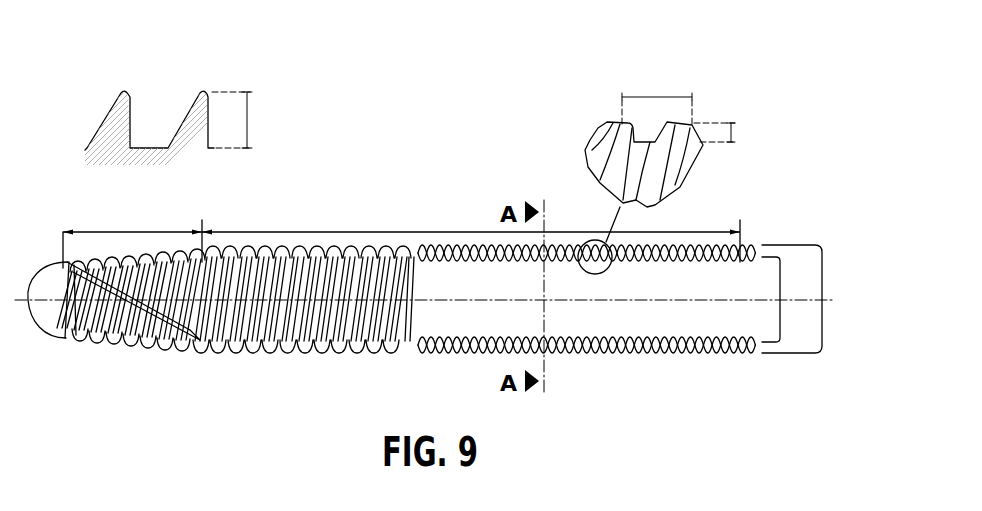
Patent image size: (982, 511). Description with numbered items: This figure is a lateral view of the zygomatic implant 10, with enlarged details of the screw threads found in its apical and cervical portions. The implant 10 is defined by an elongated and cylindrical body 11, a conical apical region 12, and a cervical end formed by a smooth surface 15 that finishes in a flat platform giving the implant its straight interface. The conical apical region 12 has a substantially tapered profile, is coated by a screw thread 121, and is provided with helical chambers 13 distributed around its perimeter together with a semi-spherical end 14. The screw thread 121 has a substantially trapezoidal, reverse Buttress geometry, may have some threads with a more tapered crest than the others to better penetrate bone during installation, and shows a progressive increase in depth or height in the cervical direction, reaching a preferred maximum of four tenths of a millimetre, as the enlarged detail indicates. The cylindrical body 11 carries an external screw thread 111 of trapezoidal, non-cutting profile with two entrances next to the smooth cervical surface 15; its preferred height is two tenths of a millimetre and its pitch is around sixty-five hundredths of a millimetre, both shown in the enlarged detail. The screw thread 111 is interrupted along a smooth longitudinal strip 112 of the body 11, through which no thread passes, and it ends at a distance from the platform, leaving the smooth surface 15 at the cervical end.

The zygomatic implant 10 is at (792, 214).
The elongated and cylindrical body 11 is at (483, 270).
The conical apical region 12 is at (131, 280).
The helical chambers 13 is at (200, 343).
The semi-spherical end 14 is at (48, 318).
The smooth surface 15 is at (798, 330).
The screw thread 111 is at (608, 125).
The longitudinal strip 112 is at (668, 308).
The screw thread 121 is at (185, 117).